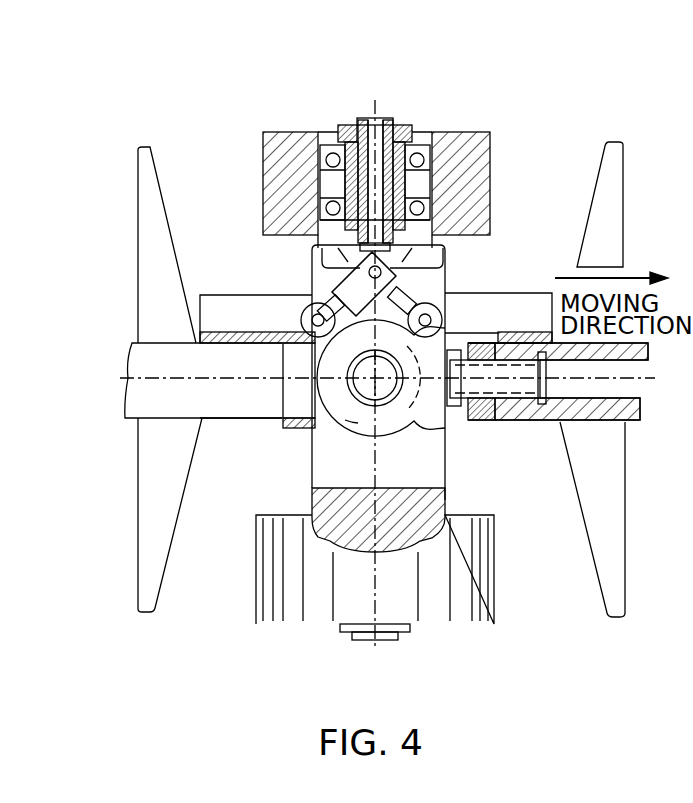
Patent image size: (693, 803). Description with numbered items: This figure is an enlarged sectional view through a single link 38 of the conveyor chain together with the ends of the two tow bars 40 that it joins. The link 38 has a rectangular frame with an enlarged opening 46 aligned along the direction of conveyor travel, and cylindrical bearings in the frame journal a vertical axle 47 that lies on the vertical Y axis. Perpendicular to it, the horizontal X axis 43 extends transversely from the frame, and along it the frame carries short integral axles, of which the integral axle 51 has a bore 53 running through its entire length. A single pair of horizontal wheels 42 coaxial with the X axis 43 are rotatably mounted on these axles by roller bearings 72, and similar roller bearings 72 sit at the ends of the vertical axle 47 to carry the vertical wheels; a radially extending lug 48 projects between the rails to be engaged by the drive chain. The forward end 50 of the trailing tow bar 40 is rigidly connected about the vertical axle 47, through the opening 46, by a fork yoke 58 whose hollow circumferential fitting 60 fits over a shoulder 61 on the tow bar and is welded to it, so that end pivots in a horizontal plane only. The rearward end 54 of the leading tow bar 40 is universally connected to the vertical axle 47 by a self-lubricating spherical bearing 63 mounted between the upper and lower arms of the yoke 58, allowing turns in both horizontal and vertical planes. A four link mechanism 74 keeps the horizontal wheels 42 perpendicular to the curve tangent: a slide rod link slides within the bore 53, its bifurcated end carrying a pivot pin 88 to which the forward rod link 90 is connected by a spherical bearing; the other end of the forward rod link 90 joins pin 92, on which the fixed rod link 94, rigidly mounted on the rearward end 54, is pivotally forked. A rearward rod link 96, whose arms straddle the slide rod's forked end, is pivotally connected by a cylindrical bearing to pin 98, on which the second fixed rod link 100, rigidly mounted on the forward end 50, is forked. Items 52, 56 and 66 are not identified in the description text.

The link 38 is at (491, 94).
The tow bar 40 is at (133, 406).
The horizontal wheels 42 is at (441, 132).
The X axis 43 is at (378, 608).
The opening 46 is at (372, 490).
The vertical axle 47 is at (372, 397).
The lug 48 is at (153, 228).
The forward end 50 is at (238, 420).
The integral axle 51 is at (387, 118).
The right wheel 52 is at (620, 218).
The bore 53 is at (373, 118).
The rearward end 54 is at (503, 420).
The bushing 56 is at (648, 343).
The fork yoke 58 is at (357, 428).
The circumferential fitting 60 is at (305, 428).
The shoulder 61 is at (290, 428).
The spherical bearing 63 is at (455, 408).
The housing wall 66 is at (446, 502).
The roller bearings 72 is at (334, 144).
The four link mechanism 74 is at (519, 223).
The pivot pin 88 is at (383, 272).
The forward rod link 90 is at (410, 293).
The pin 92 is at (425, 320).
The fixed rod link 94 is at (530, 300).
The rearward rod link 96 is at (345, 282).
The pin 98 is at (318, 320).
The second fixed rod link 100 is at (232, 303).